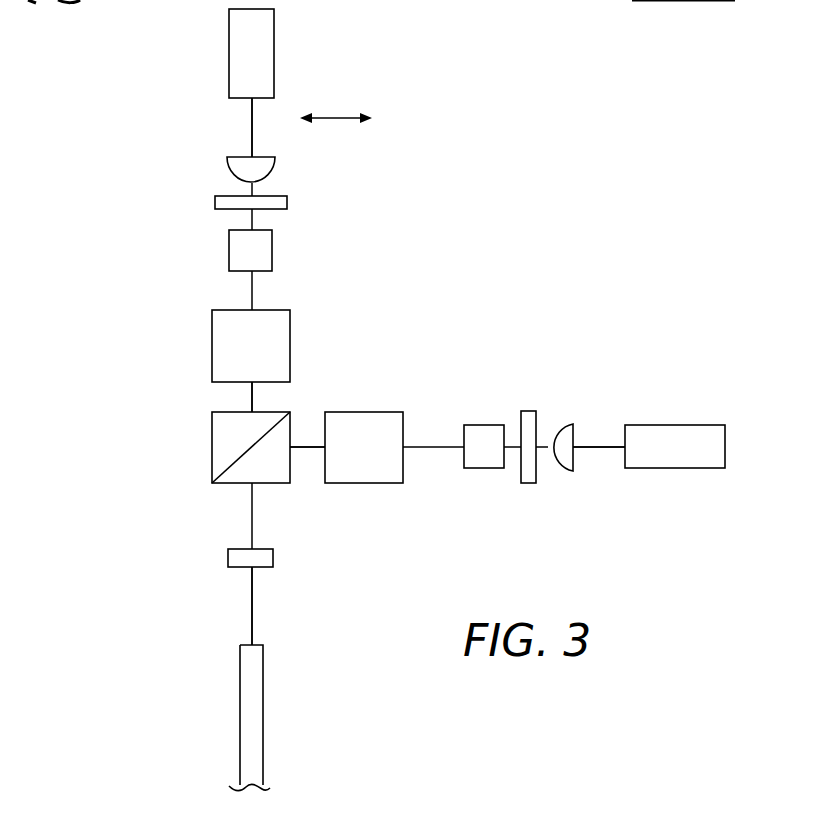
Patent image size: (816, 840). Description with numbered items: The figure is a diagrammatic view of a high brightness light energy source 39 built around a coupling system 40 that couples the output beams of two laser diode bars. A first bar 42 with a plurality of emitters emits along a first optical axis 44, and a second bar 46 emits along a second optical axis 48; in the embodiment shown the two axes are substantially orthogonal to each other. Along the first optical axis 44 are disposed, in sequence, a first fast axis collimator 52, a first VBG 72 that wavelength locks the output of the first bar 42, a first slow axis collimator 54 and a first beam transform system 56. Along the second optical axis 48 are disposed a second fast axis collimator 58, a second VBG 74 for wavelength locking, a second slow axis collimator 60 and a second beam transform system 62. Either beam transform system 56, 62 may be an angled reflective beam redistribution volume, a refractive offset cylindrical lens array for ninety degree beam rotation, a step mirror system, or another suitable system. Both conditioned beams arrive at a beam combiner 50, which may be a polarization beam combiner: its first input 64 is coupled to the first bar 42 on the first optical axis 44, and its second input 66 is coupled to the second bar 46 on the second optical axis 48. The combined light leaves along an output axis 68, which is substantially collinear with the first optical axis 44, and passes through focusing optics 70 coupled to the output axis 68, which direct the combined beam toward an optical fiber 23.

The optical fiber 23 is at (256, 645).
The high brightness light energy source 39 is at (572, 215).
The coupling system 40 is at (124, 404).
The first bar 42 is at (271, 53).
The first optical axis 44 is at (250, 128).
The second bar 46 is at (674, 425).
The second optical axis 48 is at (600, 447).
The beam combiner 50 is at (212, 447).
The first fast axis collimator 52 is at (275, 169).
The first slow axis collimator 54 is at (272, 250).
The first beam transform system 56 is at (290, 347).
The second fast axis collimator 58 is at (559, 425).
The second slow axis collimator 60 is at (484, 425).
The second beam transform system 62 is at (366, 412).
The first input 64 is at (230, 410).
The second input 66 is at (290, 468).
The output axis 68 is at (251, 604).
The focusing optics 70 is at (228, 558).
The first VBG 72 is at (215, 202).
The second VBG 74 is at (528, 483).